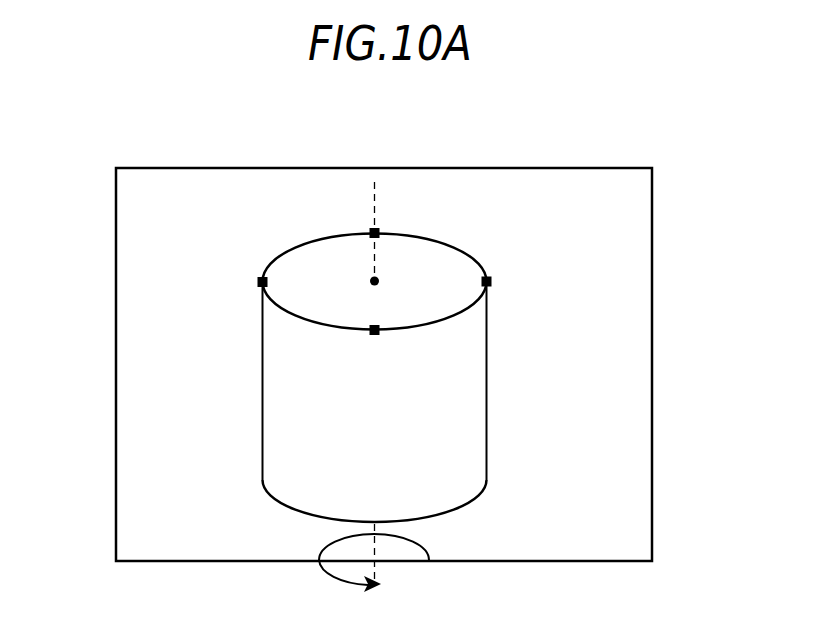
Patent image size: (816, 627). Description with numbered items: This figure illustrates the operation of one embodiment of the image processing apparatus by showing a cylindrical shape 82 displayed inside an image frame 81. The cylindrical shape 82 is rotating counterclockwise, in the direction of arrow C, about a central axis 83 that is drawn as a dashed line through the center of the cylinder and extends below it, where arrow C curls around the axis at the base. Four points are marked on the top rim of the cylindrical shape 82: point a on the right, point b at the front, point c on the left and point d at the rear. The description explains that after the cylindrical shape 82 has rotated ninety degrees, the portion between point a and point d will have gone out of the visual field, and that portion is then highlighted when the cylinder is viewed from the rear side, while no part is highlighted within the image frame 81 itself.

The image frame 81 is at (653, 530).
The cylindrical shape 82 is at (452, 484).
The central axis 83 is at (375, 186).
The point a is at (492, 279).
The point b is at (378, 230).
The point c is at (258, 281).
The point d is at (380, 332).
The arrow C is at (320, 568).